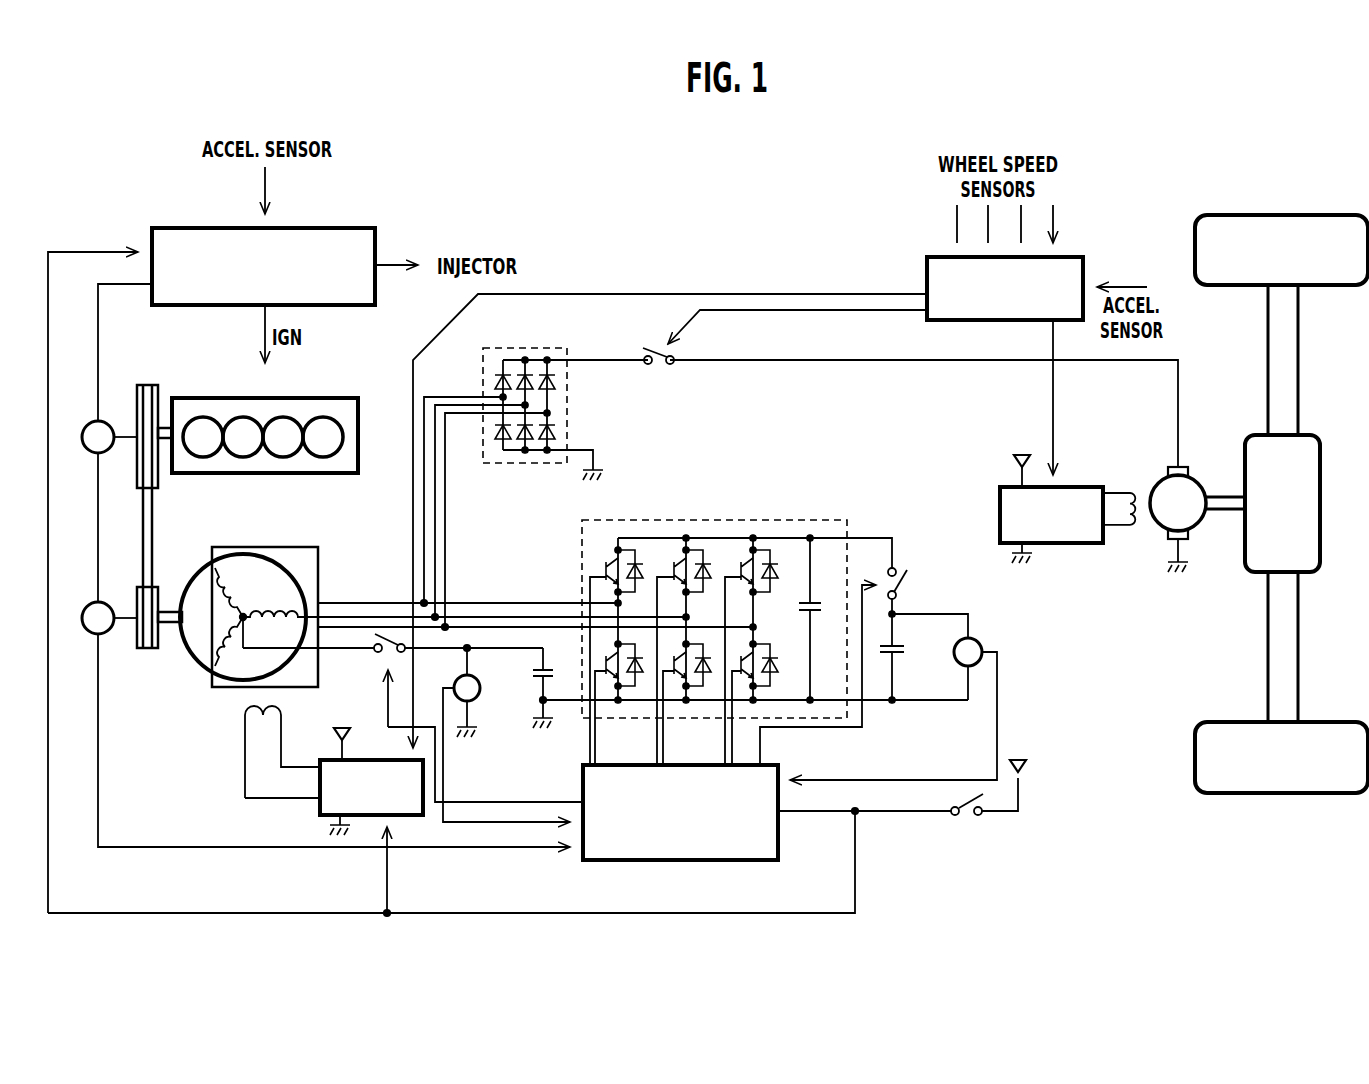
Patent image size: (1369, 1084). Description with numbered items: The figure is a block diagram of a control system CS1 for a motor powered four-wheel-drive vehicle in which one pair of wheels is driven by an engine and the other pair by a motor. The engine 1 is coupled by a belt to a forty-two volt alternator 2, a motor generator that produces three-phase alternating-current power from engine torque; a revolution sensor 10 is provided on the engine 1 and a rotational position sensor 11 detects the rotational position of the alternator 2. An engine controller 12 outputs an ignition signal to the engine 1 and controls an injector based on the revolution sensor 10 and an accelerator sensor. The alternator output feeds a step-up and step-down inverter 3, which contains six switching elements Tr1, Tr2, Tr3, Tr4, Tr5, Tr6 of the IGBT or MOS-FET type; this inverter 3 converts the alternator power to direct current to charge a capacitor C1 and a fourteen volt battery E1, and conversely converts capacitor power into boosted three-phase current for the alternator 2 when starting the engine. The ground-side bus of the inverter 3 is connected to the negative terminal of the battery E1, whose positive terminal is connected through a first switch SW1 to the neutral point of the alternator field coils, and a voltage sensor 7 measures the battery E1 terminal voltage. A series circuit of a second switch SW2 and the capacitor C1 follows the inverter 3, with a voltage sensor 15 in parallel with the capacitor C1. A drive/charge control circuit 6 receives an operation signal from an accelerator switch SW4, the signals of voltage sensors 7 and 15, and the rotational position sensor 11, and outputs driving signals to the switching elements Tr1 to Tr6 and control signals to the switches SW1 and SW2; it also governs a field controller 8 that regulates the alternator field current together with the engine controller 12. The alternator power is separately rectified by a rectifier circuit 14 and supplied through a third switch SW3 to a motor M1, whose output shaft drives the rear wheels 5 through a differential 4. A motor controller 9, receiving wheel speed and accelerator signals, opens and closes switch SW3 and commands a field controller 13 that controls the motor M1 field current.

The engine 1 is at (213, 398).
The 42-V alternator 2 is at (196, 570).
The step-up and step-down inverter 3 is at (687, 610).
The differential 4 is at (1320, 475).
The rear wheels 5 is at (1283, 215).
The drive/charge control circuit 6 is at (772, 748).
The voltage sensor 7 is at (480, 680).
The field controller 8 is at (320, 760).
The motor controller 9 is at (1070, 257).
The revolution sensor 10 is at (90, 423).
The rotational position sensor 11 is at (97, 602).
The engine controller 12 is at (176, 228).
The field controller 13 is at (1087, 487).
The rectifier circuit 14 is at (567, 405).
The voltage sensor 15 is at (980, 642).
The first switch SW1 is at (380, 658).
The second switch SW2 is at (912, 588).
The third switch SW3 is at (642, 351).
The accelerator switch SW4 is at (972, 816).
The switching element Tr1 is at (608, 558).
The switching element Tr2 is at (676, 558).
The switching element Tr3 is at (743, 558).
The switching element Tr4 is at (606, 650).
The switching element Tr5 is at (673, 690).
The switching element Tr6 is at (741, 652).
The capacitor C1 is at (906, 650).
The 14-V battery E1 is at (532, 683).
The motor M1 is at (1200, 480).
The control system CS1 is at (686, 200).